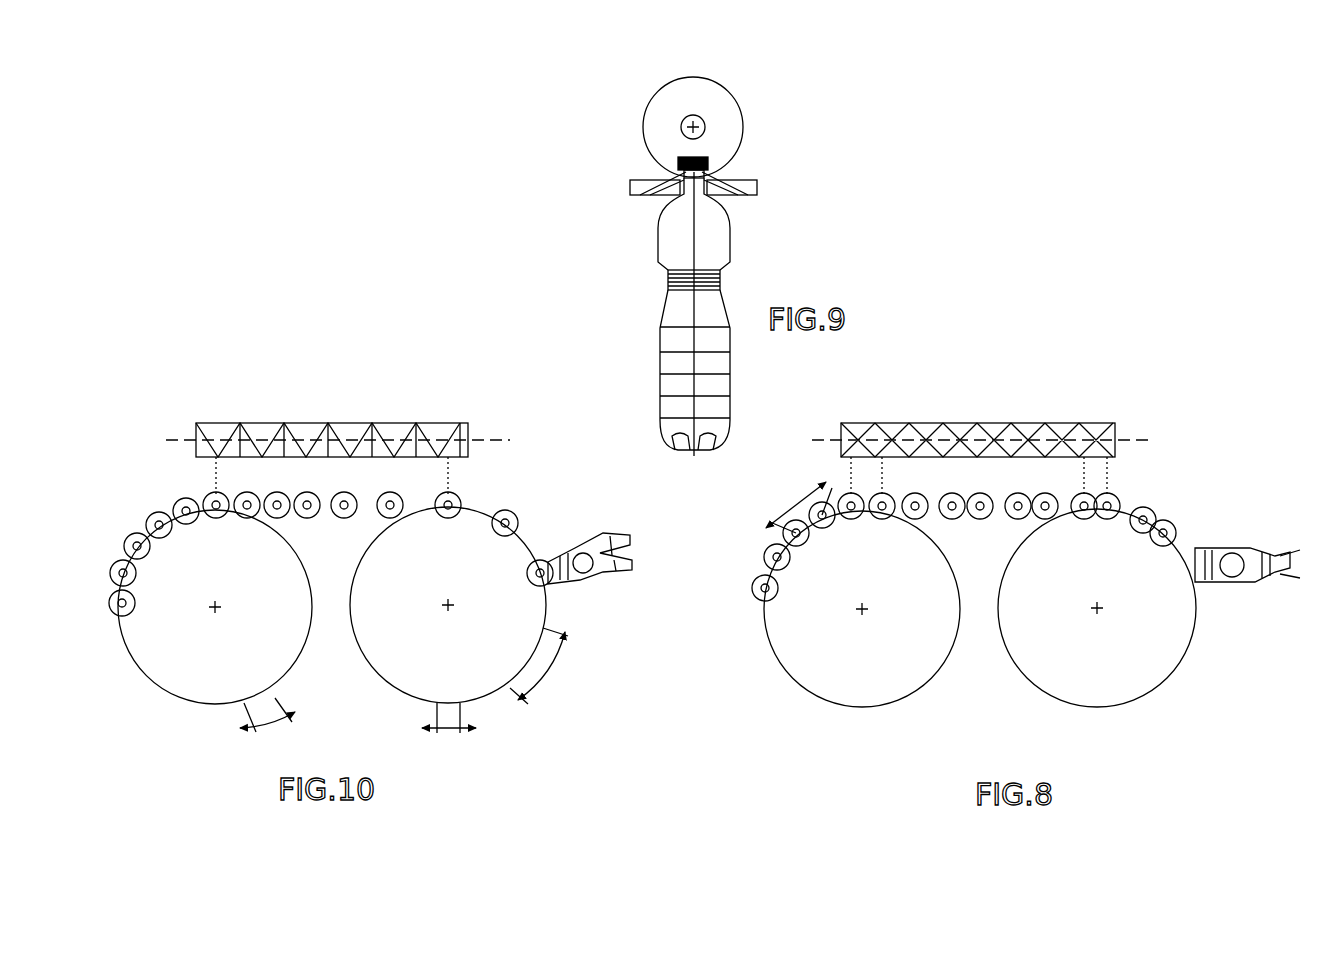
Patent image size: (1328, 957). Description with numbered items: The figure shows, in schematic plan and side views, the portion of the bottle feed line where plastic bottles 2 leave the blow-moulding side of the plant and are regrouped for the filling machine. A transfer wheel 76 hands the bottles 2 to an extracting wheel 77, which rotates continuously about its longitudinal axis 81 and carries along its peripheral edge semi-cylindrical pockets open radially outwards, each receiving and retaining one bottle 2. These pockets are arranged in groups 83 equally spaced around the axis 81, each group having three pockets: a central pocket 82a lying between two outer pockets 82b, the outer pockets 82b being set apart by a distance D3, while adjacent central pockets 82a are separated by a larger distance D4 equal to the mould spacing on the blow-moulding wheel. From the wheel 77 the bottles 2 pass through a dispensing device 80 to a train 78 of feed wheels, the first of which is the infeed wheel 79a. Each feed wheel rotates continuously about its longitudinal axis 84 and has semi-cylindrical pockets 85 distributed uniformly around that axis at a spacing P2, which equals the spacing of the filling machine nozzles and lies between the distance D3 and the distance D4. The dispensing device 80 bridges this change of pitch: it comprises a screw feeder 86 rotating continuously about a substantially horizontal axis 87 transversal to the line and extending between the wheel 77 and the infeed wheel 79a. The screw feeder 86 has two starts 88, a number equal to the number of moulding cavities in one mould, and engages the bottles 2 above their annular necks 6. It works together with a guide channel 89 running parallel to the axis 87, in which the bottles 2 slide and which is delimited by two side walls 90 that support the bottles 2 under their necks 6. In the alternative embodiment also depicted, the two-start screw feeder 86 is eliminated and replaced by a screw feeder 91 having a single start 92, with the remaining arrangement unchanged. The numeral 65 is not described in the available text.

In FIG. 9, the plastic bottle 2 is at (662, 365).
In FIG. 10, the plastic bottle 2 is at (110, 598).
In FIG. 8, the plastic bottle 2 is at (1170, 526).
In FIG. 9, the annular neck 6 is at (706, 166).
In FIG. 10, the gripper 65 is at (596, 554).
In FIG. 8, the gripper 65 is at (1247, 509).
In FIG. 10, the transfer wheel 76 is at (604, 597).
In FIG. 8, the transfer wheel 76 is at (1233, 507).
In FIG. 10, the extracting wheel 77 is at (386, 562).
In FIG. 8, the extracting wheel 77 is at (1069, 696).
In FIG. 8, the train of feed wheels 78 is at (763, 680).
In FIG. 10, the infeed wheel 79a is at (152, 639).
In FIG. 8, the infeed wheel 79a is at (812, 696).
In FIG. 9, the dispensing device 80 is at (703, 112).
In FIG. 10, the dispensing device 80 is at (350, 411).
In FIG. 8, the dispensing device 80 is at (998, 406).
In FIG. 8, the longitudinal axis 81 is at (1091, 620).
In FIG. 10, the central pocket 82a is at (408, 688).
In FIG. 8, the central pocket 82a is at (1096, 712).
In FIG. 10, the outer pockets 82b is at (352, 628).
In FIG. 8, the outer pockets 82b is at (1195, 630).
In FIG. 8, the groups of pockets 83 is at (996, 646).
In FIG. 10, the longitudinal axis 84 is at (213, 613).
In FIG. 8, the longitudinal axis 84 is at (860, 613).
In FIG. 10, the semi-cylindrical pockets 85 is at (140, 665).
In FIG. 8, the semi-cylindrical pockets 85 is at (762, 618).
In FIG. 9, the screw feeder 86 is at (677, 98).
In FIG. 8, the screw feeder 86 is at (989, 410).
In FIG. 9, the longitudinal axis 87 is at (698, 123).
In FIG. 10, the longitudinal axis 87 is at (482, 440).
In FIG. 8, the longitudinal axis 87 is at (1134, 440).
In FIG. 8, the starts 88 is at (1080, 440).
In FIG. 9, the guide channel 89 is at (653, 200).
In FIG. 9, the side walls 90 is at (642, 181).
In FIG. 10, the screw feeder 91 is at (367, 423).
In FIG. 10, the single start 92 is at (425, 423).
In FIG. 10, the spacing P2 is at (267, 721).
In FIG. 8, the spacing P2 is at (799, 505).
In FIG. 10, the distance D3 is at (449, 735).
In FIG. 10, the distance D4 is at (546, 666).